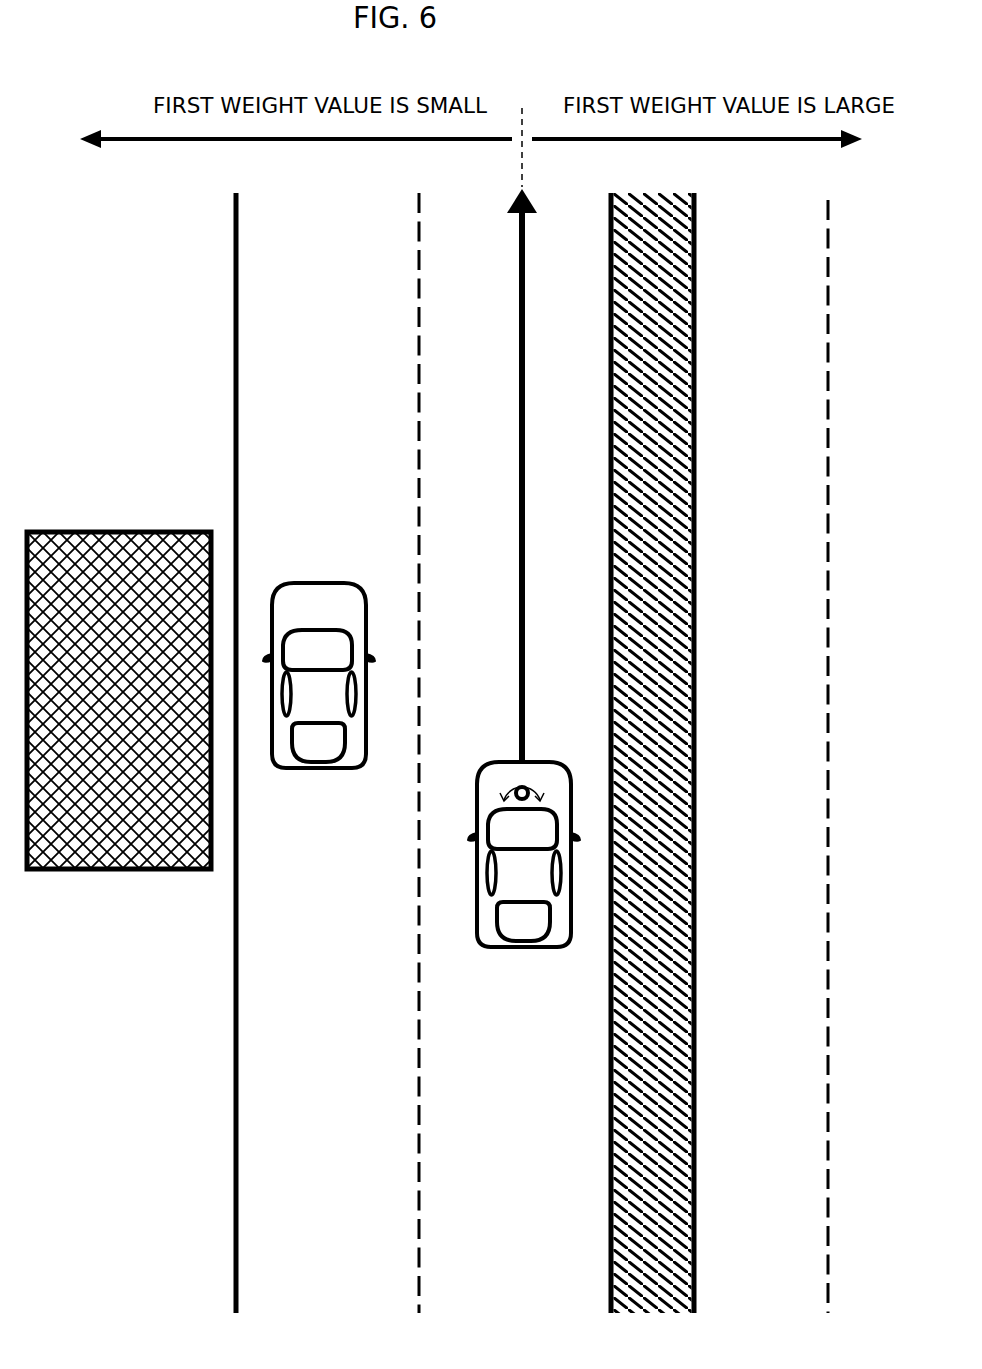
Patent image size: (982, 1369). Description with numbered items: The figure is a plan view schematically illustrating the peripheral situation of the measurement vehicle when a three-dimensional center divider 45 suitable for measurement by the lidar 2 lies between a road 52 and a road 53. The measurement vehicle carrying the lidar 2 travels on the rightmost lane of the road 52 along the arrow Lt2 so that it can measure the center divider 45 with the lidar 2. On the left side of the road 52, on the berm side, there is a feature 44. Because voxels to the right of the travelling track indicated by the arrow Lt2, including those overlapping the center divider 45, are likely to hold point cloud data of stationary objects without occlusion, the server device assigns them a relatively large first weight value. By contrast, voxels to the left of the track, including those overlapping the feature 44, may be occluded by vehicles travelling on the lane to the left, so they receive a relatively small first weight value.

The lidar 2 is at (532, 783).
The feature 44 is at (129, 532).
The center divider 45 is at (695, 489).
The road 52 is at (325, 189).
The road 53 is at (792, 194).
The arrow Lt2 is at (518, 278).